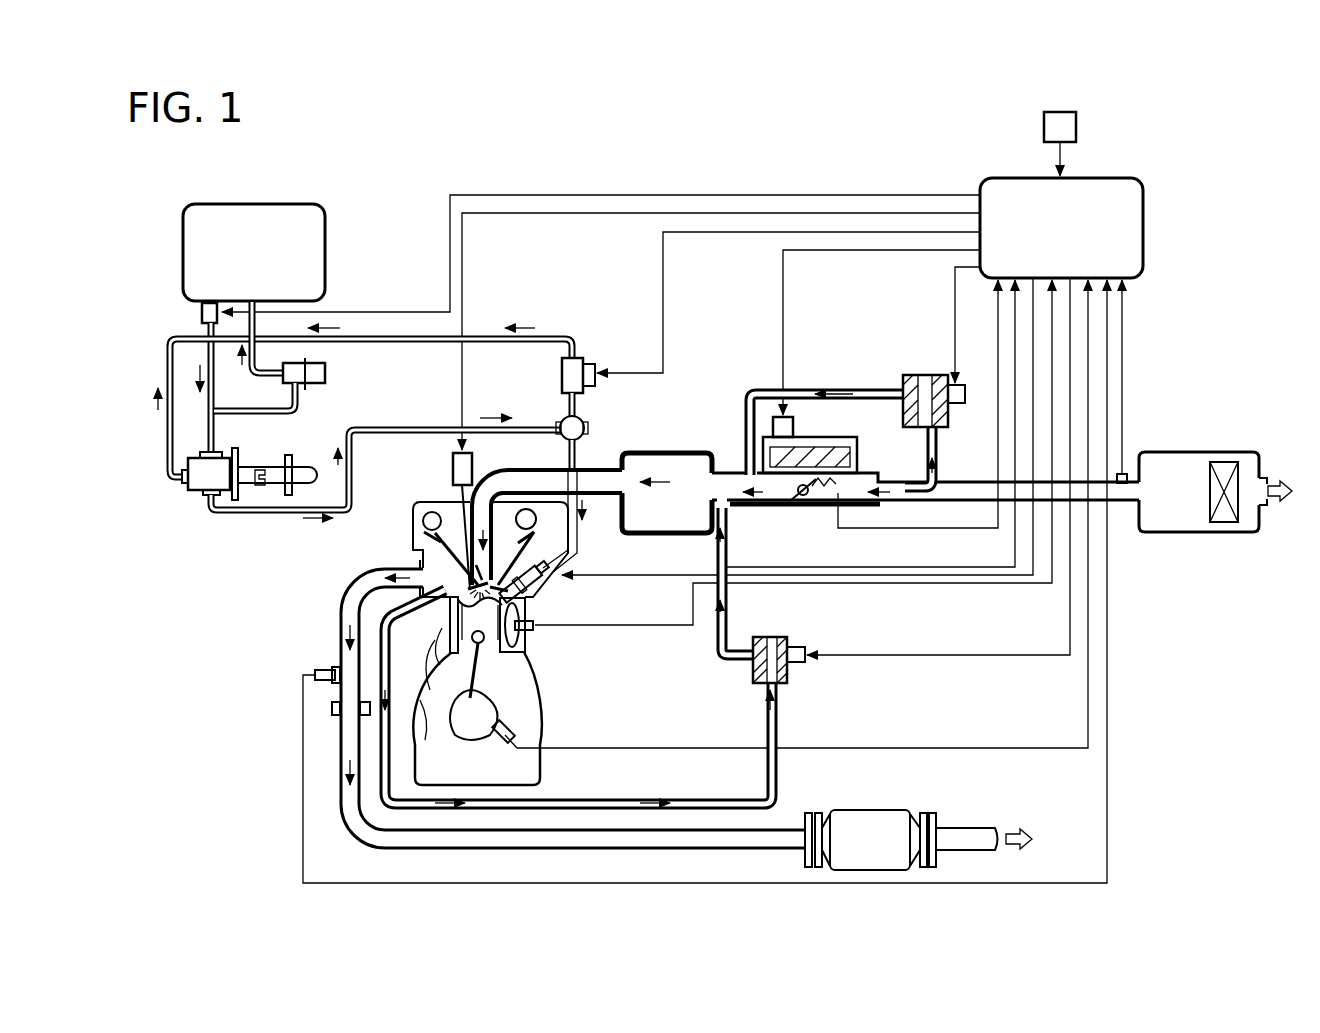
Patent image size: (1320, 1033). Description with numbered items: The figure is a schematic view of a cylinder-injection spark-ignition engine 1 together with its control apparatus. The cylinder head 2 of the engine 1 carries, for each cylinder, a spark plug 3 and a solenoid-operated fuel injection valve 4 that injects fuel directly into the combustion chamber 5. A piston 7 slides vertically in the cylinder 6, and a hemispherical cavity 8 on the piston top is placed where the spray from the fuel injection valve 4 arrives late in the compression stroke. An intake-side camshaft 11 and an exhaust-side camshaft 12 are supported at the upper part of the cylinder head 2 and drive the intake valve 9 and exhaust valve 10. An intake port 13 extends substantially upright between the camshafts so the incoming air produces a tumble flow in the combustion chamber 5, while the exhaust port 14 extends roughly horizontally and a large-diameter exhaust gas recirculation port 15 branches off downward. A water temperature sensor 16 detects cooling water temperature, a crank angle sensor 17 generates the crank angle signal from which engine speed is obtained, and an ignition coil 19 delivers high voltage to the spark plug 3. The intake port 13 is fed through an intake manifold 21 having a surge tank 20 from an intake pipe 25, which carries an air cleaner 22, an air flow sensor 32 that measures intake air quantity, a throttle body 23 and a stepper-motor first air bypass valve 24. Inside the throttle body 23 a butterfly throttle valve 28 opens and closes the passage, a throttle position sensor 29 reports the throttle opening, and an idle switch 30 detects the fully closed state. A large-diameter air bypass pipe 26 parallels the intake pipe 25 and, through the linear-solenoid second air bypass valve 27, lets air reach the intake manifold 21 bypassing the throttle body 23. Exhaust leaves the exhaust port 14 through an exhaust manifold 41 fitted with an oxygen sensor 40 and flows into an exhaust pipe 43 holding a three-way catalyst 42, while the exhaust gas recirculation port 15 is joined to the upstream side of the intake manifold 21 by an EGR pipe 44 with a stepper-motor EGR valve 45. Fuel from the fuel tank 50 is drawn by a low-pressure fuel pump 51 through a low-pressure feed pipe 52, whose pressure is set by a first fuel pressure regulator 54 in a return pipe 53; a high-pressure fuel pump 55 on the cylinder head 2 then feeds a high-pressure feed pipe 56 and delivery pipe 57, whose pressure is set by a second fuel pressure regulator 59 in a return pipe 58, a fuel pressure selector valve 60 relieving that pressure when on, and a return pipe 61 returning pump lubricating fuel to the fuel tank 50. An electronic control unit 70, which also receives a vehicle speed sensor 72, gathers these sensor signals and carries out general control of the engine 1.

The engine 1 is at (565, 698).
The cylinder head 2 is at (418, 500).
The spark plug 3 is at (435, 560).
The fuel injection valve 4 is at (548, 590).
The combustion chamber 5 is at (452, 618).
The cylinder 6 is at (522, 660).
The piston 7 is at (447, 655).
The hemispherical cavity 8 is at (510, 602).
The intake valve 9 is at (600, 559).
The exhaust valve 10 is at (418, 530).
The intake-side camshaft 11 is at (579, 521).
The exhaust-side camshaft 12 is at (316, 470).
The intake port 13 is at (475, 490).
The exhaust port 14 is at (400, 563).
The exhaust gas recirculation port 15 is at (366, 580).
The water temperature sensor 16 is at (540, 632).
The crank angle sensor 17 is at (512, 730).
The ignition coil 19 is at (453, 468).
The surge tank 20 is at (665, 462).
The intake manifold 21 is at (598, 470).
The air cleaner 22 is at (1218, 462).
The throttle body 23 is at (795, 508).
The first air bypass valve 24 is at (793, 425).
The intake pipe 25 is at (955, 483).
The air bypass pipe 26 is at (852, 392).
The second air bypass valve 27 is at (908, 372).
The throttle valve 28 is at (798, 495).
The throttle position sensor 29 is at (830, 484).
The idle switch 30 is at (812, 500).
The air flow sensor 32 is at (1123, 484).
The oxygen sensor 40 is at (318, 668).
The exhaust manifold 41 is at (338, 600).
The three-way catalyst 42 is at (872, 825).
The exhaust pipe 43 is at (780, 828).
The EGR pipe 44 is at (763, 773).
The EGR valve 45 is at (812, 680).
The fuel tank 50 is at (325, 232).
The low-pressure fuel pump 51 is at (200, 312).
The low-pressure feed pipe 52 is at (214, 445).
The return pipe 53 is at (300, 397).
The first fuel pressure regulator 54 is at (325, 370).
The high-pressure fuel pump 55 is at (190, 498).
The high-pressure feed pipe 56 is at (236, 512).
The delivery pipe 57 is at (585, 428).
The return pipe 58 is at (492, 338).
The second fuel pressure regulator 59 is at (562, 370).
The fuel pressure selector valve 60 is at (595, 366).
The return pipe 61 is at (167, 360).
The electronic control unit 70 is at (1143, 200).
The vehicle speed sensor 72 is at (1077, 127).